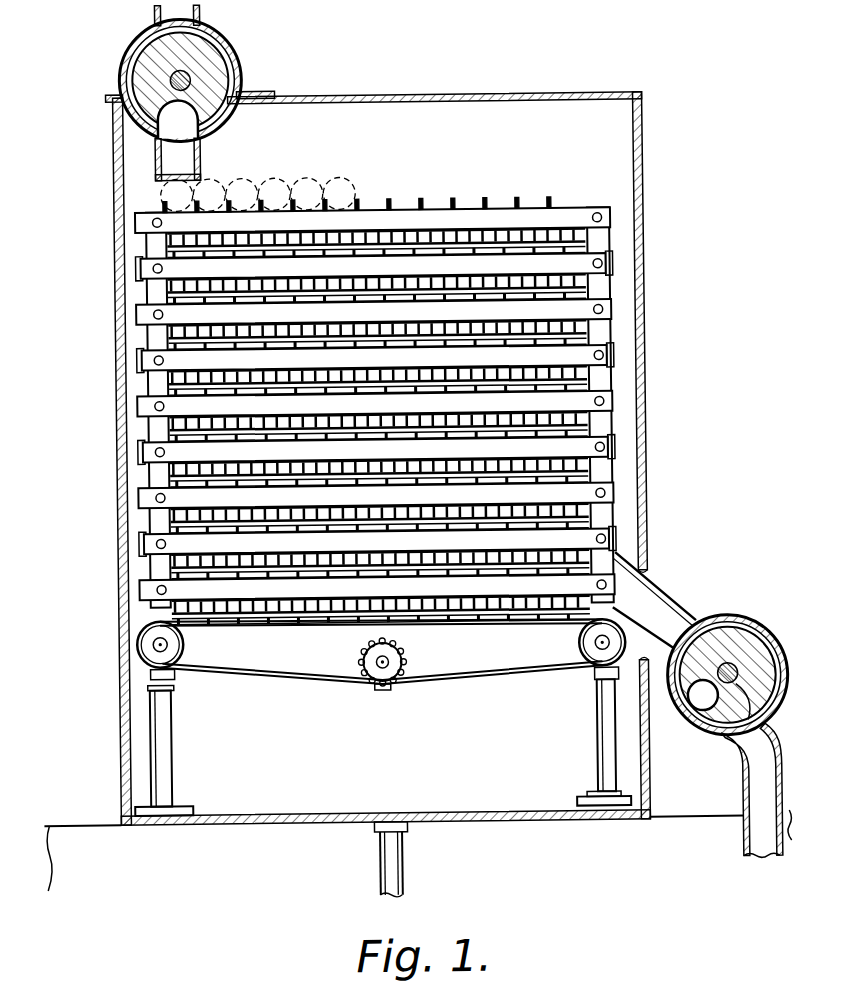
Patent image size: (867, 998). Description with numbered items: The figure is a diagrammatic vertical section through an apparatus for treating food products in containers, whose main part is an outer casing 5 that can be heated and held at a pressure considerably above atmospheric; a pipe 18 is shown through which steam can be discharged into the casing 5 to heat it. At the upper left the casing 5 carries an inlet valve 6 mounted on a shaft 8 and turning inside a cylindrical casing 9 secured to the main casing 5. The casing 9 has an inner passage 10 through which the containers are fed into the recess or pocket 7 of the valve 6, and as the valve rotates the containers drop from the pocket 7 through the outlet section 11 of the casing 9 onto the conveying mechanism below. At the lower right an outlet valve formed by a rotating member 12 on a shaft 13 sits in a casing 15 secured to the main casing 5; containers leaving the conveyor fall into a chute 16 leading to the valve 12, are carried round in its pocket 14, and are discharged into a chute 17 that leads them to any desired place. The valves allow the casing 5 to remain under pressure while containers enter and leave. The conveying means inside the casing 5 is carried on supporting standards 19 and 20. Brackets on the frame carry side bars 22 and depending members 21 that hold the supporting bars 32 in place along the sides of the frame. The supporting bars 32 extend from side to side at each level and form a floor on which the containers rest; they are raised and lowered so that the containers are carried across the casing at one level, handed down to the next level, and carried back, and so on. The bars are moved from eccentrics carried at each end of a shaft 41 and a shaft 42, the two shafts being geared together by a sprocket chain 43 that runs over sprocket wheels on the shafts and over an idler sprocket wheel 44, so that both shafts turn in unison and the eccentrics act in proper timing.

The outer casing 5 is at (647, 316).
The inlet valve 6 is at (233, 73).
The recess or pocket 7 is at (182, 116).
The shaft 8 is at (223, 56).
The cylindrical casing 9 is at (250, 92).
The inner passage 10 is at (170, 16).
The feed pipe 11 is at (196, 156).
The rotating member 12 is at (717, 631).
The shaft 13 is at (757, 628).
The pocket 14 is at (691, 729).
The casing 15 is at (740, 746).
The chute 16 is at (653, 603).
The chute 17 is at (763, 841).
The pipe 18 is at (398, 853).
The supporting standard 19 is at (165, 720).
The supporting standard 20 is at (593, 750).
The depending member 21 is at (159, 566).
The side bar 22 is at (397, 215).
The supporting bar 32 is at (491, 207).
The shaft 41 is at (155, 645).
The shaft 42 is at (588, 645).
The sprocket chain 43 is at (434, 681).
The idler sprocket wheel 44 is at (363, 661).